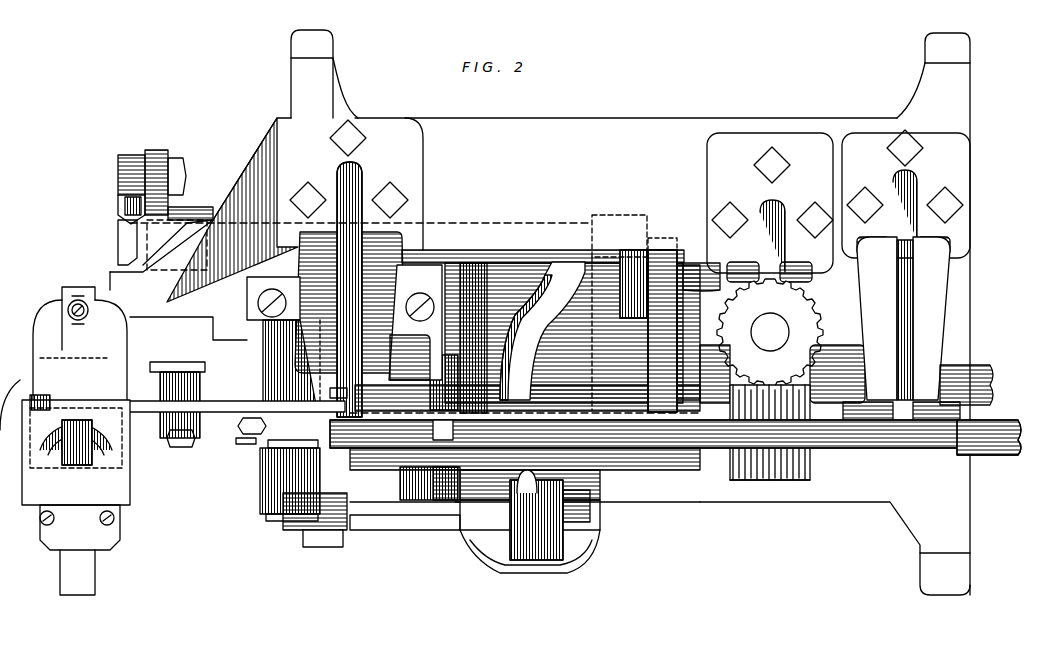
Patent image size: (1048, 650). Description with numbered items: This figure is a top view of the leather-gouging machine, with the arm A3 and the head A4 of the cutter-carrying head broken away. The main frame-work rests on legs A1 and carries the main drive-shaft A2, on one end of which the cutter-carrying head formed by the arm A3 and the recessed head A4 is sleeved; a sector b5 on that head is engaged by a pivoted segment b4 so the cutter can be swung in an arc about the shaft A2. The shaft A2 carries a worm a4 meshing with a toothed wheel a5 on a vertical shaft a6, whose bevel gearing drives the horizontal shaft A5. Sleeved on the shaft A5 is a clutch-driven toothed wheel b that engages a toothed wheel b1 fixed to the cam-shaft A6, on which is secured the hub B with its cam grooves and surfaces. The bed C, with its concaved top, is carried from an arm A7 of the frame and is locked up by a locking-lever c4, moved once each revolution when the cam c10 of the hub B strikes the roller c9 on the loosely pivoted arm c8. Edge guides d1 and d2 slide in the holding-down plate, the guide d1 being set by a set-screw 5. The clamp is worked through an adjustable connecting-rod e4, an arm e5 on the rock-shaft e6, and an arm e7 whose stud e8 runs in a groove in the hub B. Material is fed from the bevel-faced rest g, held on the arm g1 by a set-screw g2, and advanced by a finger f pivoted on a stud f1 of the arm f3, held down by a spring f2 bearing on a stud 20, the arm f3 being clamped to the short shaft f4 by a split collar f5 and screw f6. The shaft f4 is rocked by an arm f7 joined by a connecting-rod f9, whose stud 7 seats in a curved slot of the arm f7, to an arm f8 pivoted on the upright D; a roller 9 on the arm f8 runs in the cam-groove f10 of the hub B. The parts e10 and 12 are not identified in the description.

The legs A1 is at (330, 88).
The main drive-shaft A2 is at (1000, 452).
The arm A3 is at (428, 432).
The enlarged recessed head A4 is at (925, 578).
The horizontal shaft A5 is at (688, 450).
The cam-shaft A6 is at (978, 365).
The arm A7 is at (185, 265).
The hub B is at (540, 262).
The bed C is at (30, 412).
The upright D is at (560, 573).
The worm a4 is at (800, 475).
The toothed wheel a5 is at (800, 338).
The vertical shaft a6 is at (770, 332).
The toothed wheel b is at (665, 265).
The toothed wheel b1 is at (682, 305).
The pivoted segment b4 is at (445, 500).
The sector b5 is at (447, 356).
The locking-lever c4 is at (255, 352).
The arm or hub c8 is at (420, 495).
The roller or stud c9 is at (438, 338).
The cam c10 is at (530, 500).
The edge guide d1 is at (62, 334).
The edge guide d2 is at (96, 580).
The adjustable connecting-rod e4 is at (122, 203).
The arm e5 is at (158, 152).
The horizontal rock-shaft e6 is at (190, 212).
The arm e7 is at (633, 268).
The stud e8 is at (612, 290).
The rod end e10 is at (118, 240).
The finger f is at (152, 413).
The stud f1 is at (340, 396).
The spring f2 is at (291, 365).
The arm f3 is at (230, 435).
The short shaft f4 is at (262, 455).
The split collar f5 is at (239, 442).
The screw f6 is at (240, 426).
The arm f7 is at (352, 505).
The arm f8 is at (593, 507).
The connecting-rod f9 is at (398, 528).
The cam-groove f10 is at (520, 370).
The bevel-faced rest or plate g is at (118, 420).
The arm g1 is at (200, 385).
The set-screw g2 is at (181, 447).
The set-screw 5 is at (70, 306).
The stud 7 is at (325, 538).
The roller or stud 9 is at (553, 496).
The arc 12 is at (10, 396).
The stud 20 is at (305, 388).